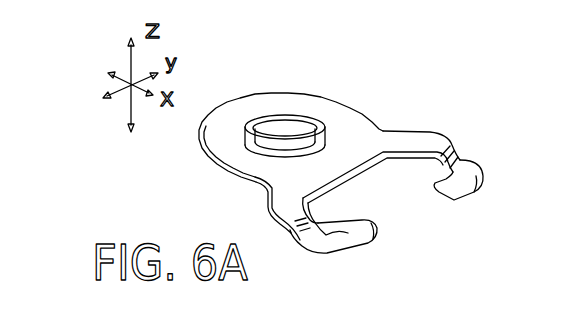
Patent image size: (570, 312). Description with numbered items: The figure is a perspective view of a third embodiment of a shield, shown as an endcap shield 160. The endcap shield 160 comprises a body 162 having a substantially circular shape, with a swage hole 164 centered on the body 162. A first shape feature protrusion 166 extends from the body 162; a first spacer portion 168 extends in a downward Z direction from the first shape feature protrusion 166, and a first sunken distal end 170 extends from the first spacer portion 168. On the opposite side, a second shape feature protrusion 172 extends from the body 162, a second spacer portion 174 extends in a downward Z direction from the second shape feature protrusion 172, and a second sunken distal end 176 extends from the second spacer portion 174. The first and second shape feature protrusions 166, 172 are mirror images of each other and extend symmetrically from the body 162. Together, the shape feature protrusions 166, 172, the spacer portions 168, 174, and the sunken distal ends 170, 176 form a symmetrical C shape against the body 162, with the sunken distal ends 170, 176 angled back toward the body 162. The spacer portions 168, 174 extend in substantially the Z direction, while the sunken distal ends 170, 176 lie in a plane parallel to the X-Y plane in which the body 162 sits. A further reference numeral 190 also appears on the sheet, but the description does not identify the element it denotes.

The endcap shield 160 is at (384, 83).
The body 162 is at (205, 139).
The swage hole 164 is at (292, 118).
The first shape feature protrusion 166 is at (432, 143).
The first spacer portion 168 is at (462, 148).
The first sunken distal end 170 is at (468, 167).
The second shape feature protrusion 172 is at (280, 208).
The second spacer portion 174 is at (292, 235).
The second sunken distal end 176 is at (317, 242).
The mounting element 190 is at (442, 310).